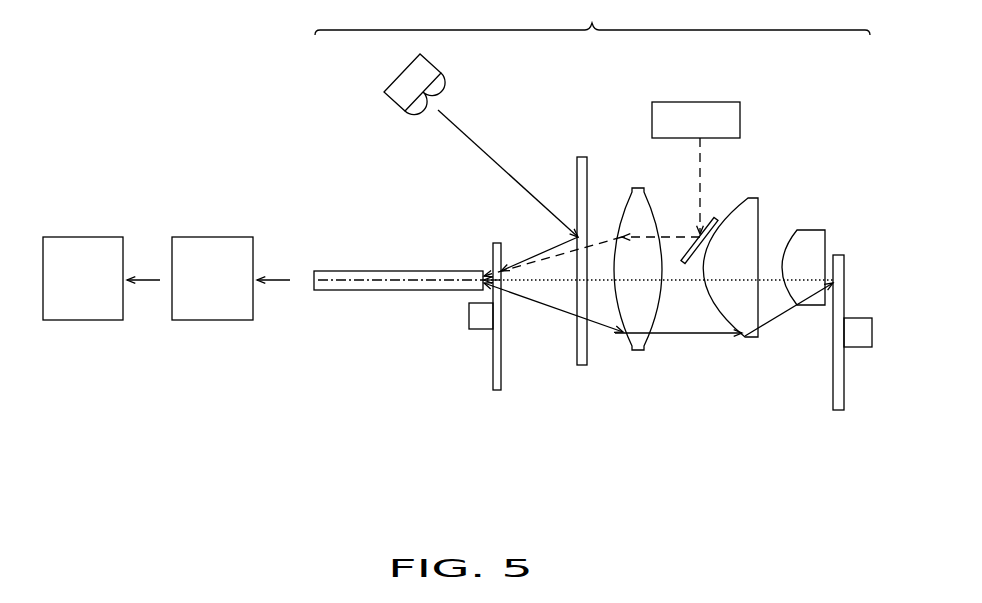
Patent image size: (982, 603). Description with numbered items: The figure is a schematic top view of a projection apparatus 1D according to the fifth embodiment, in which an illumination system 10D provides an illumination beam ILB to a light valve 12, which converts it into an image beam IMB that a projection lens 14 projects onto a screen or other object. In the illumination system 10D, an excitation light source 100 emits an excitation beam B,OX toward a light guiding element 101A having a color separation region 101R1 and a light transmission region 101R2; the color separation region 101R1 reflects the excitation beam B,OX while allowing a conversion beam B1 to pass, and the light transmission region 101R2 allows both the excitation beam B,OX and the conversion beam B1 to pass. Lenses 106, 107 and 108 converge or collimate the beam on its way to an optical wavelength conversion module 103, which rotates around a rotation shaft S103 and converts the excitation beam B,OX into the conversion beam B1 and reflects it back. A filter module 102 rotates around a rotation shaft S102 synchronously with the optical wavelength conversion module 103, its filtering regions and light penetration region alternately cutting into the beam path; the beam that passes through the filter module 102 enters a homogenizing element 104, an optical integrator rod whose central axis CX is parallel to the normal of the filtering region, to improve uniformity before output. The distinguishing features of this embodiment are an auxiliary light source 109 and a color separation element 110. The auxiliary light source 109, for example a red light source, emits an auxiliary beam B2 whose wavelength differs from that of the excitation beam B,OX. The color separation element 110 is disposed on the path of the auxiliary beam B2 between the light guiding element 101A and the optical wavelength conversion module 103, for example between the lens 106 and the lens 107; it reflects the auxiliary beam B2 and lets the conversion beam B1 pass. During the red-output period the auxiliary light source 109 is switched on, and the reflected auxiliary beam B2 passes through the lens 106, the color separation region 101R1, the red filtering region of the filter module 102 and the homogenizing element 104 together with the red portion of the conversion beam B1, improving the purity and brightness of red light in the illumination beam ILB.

The illumination system 10D is at (592, 17).
The excitation light source 100 is at (400, 84).
The excitation beam B,OX is at (505, 177).
The central axis of the homogenizing element CX is at (345, 280).
The homogenizing element 104 is at (398, 275).
The filter module 102 is at (487, 363).
The rotation shaft of the filter module S102 is at (468, 316).
The light guiding element 101A is at (582, 158).
The color separation region 101R1 is at (575, 185).
The light transmission region 101R2 is at (569, 341).
The lens 106 is at (634, 190).
The auxiliary light source 109 is at (696, 104).
The auxiliary beam B2 is at (698, 175).
The color separation element 110 is at (712, 218).
The lens 107 is at (754, 196).
The lens 108 is at (812, 235).
The conversion beam B1 is at (762, 276).
The optical wavelength conversion module 103 is at (857, 390).
The rotation shaft of the optical wavelength conversion module S103 is at (860, 320).
The projection apparatus 1D is at (761, 490).
The projection lens 14 is at (94, 291).
The light valve 12 is at (223, 291).
The image beam IMB is at (142, 285).
The illumination beam ILB is at (272, 285).